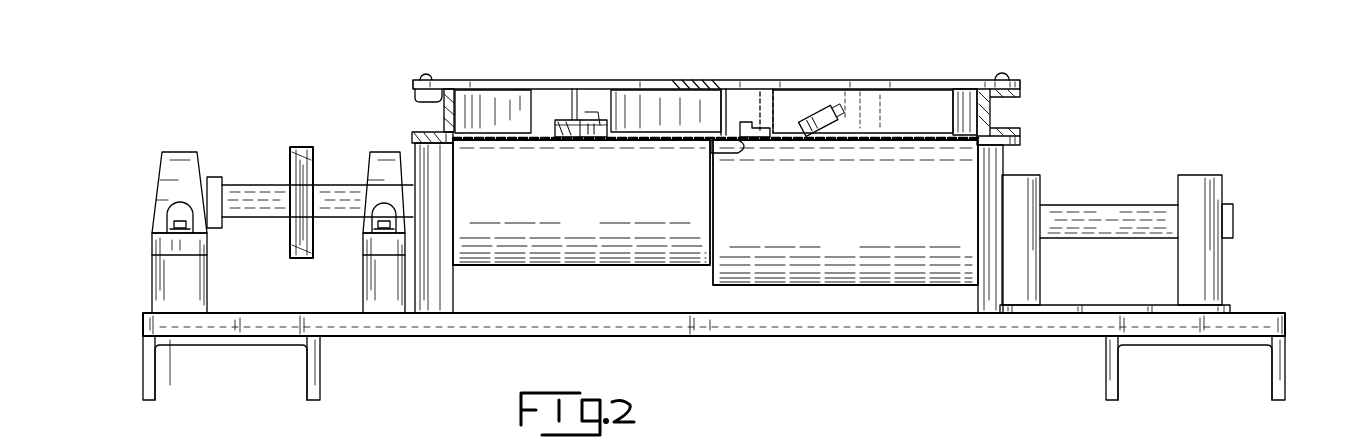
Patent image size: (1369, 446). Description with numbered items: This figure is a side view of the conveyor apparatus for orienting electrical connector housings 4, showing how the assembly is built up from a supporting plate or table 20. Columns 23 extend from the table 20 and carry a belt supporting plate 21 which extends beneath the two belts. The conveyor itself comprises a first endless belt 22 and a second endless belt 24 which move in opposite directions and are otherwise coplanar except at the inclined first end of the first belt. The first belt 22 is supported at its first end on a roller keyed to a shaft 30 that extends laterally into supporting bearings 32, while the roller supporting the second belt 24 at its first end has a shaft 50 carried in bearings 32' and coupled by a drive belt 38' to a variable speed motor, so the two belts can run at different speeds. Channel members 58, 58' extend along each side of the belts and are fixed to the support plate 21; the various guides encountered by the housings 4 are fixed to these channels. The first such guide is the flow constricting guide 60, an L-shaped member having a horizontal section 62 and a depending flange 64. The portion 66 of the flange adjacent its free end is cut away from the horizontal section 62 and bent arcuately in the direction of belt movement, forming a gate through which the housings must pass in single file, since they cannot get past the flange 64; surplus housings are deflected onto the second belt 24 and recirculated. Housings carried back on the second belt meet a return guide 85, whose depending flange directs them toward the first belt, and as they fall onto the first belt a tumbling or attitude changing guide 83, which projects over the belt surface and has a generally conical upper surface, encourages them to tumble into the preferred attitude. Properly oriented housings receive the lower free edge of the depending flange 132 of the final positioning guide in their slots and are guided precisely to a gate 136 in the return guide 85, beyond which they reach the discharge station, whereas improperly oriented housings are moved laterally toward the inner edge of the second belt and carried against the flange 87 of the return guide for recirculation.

The electrical connector housing 4 is at (593, 140).
The supporting plate or table 20 is at (755, 352).
The belt supporting plate 21 is at (412, 138).
The first endless belt 22 is at (918, 140).
The column 23 is at (430, 290).
The second endless belt 24 is at (543, 133).
The shaft 30 is at (1152, 205).
The bearing 32 is at (1136, 233).
The bearing 32' is at (275, 208).
The drive belt 38' is at (295, 167).
The shaft 50 is at (262, 218).
The channel member 58 is at (1026, 111).
The channel member 58' is at (413, 97).
The flow constricting guide 60 is at (961, 66).
The horizontal section 62 is at (870, 87).
The depending flange 64 is at (886, 122).
The arcuately bent portion 66 is at (786, 110).
The tumbling guide 83 is at (730, 153).
The return guide 85 is at (705, 90).
The return guide flange 87 is at (712, 92).
The depending flange 132 is at (574, 100).
The gate 136 is at (612, 95).